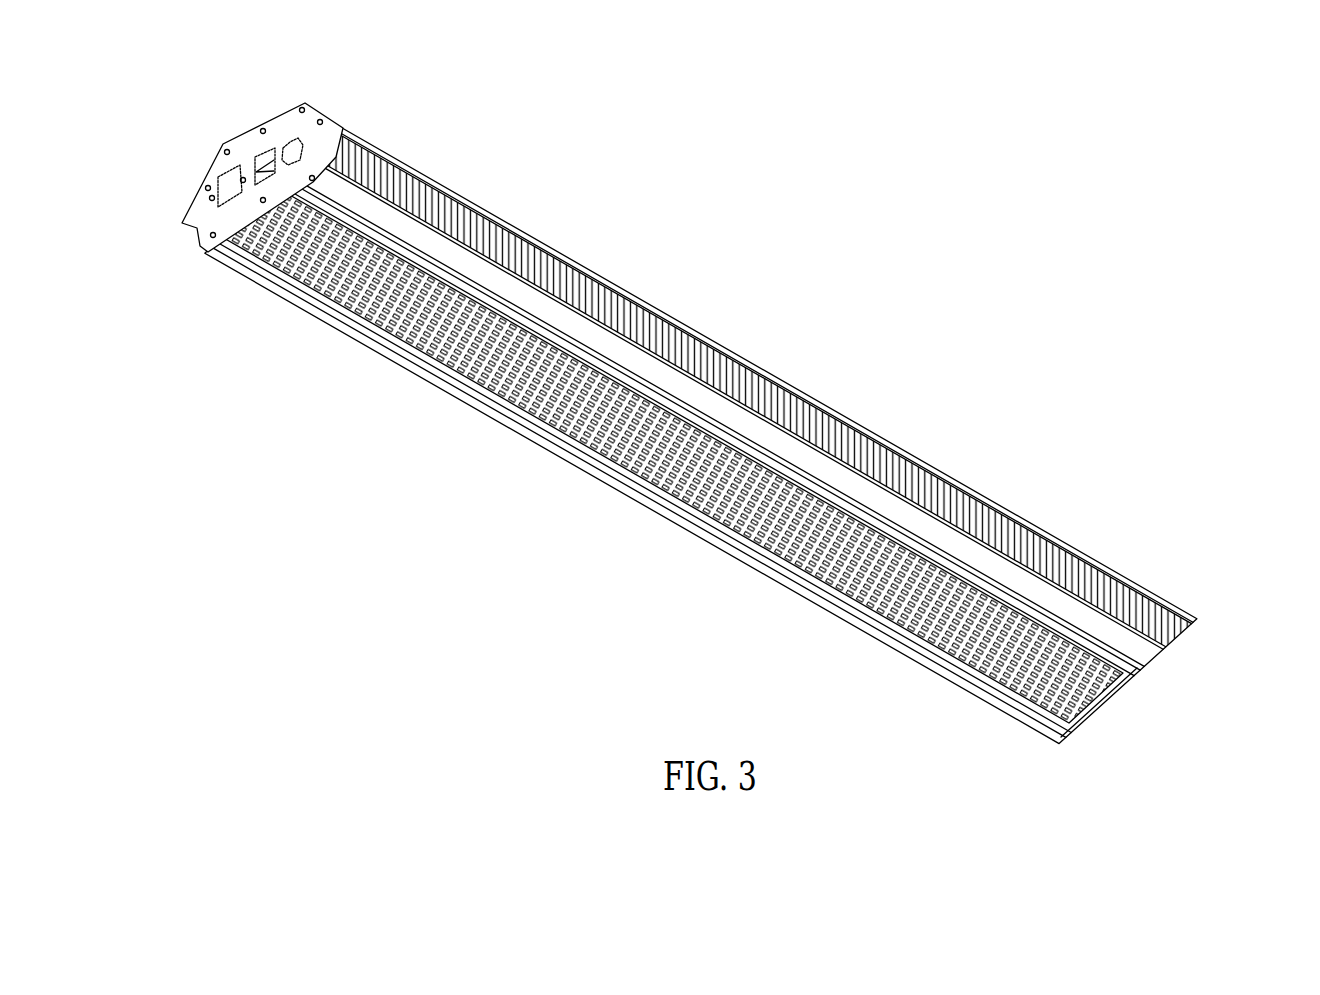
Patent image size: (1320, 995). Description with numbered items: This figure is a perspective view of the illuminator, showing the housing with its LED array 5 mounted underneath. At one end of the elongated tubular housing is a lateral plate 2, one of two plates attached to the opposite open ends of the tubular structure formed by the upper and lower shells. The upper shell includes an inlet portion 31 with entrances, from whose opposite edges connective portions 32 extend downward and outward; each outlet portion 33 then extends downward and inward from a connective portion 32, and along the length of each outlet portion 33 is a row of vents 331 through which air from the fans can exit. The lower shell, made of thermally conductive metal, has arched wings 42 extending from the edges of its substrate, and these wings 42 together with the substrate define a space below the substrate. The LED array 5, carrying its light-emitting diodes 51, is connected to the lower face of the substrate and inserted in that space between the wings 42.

The lateral plate 2 is at (202, 208).
The inlet portion 31 is at (263, 127).
The connective portion 32 is at (325, 113).
The outlet portion 33 is at (345, 147).
The vent 331 is at (452, 196).
The wing 42 is at (270, 288).
The LED array 5 is at (497, 383).
The light-emitting diode 51 is at (407, 318).